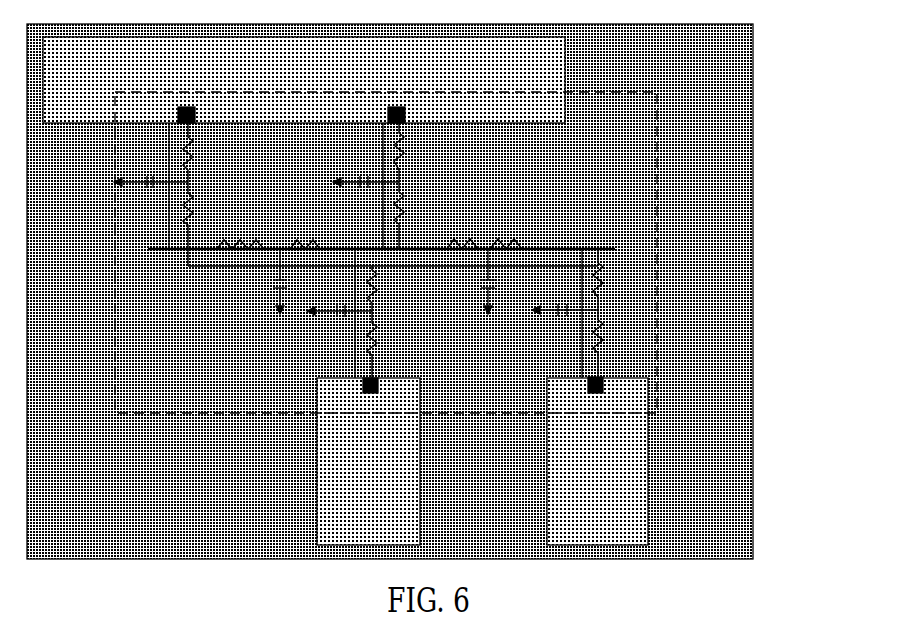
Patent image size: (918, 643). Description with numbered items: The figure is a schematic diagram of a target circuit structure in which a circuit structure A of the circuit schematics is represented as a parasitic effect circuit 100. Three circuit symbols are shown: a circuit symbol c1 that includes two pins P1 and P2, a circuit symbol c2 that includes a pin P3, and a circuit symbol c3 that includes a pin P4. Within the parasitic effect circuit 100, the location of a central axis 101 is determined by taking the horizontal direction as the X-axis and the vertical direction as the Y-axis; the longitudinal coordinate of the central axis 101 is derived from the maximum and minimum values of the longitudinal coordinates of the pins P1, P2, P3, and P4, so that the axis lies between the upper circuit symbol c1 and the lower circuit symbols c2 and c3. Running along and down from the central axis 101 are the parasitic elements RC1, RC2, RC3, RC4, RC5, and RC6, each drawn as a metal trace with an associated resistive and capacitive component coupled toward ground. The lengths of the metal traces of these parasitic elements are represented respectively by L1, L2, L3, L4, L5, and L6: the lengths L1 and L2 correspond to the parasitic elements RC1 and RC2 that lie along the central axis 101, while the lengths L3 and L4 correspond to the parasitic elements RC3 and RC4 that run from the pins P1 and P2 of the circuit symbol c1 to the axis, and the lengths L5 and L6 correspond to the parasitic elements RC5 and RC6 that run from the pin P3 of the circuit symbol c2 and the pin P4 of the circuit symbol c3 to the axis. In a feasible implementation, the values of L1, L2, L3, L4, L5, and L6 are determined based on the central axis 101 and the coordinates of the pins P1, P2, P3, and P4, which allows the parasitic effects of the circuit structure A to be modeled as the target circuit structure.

The parasitic effect circuit 100 is at (753, 144).
The central axis 101 is at (615, 250).
The circuit structure A is at (405, 233).
The circuit symbol c1 is at (304, 80).
The circuit symbol c2 is at (368, 461).
The circuit symbol c3 is at (597, 461).
The pin P1 is at (203, 113).
The pin P2 is at (413, 110).
The pin P3 is at (387, 392).
The pin P4 is at (613, 392).
The metal trace length L1 is at (280, 279).
The metal trace length L2 is at (485, 279).
The metal trace length L3 is at (152, 186).
The metal trace length L4 is at (365, 186).
The metal trace length L5 is at (341, 313).
The metal trace length L6 is at (563, 313).
The parasitic element RC1 is at (268, 232).
The parasitic element RC2 is at (487, 231).
The parasitic element RC3 is at (179, 194).
The parasitic element RC4 is at (394, 186).
The parasitic element RC5 is at (367, 322).
The parasitic element RC6 is at (592, 313).